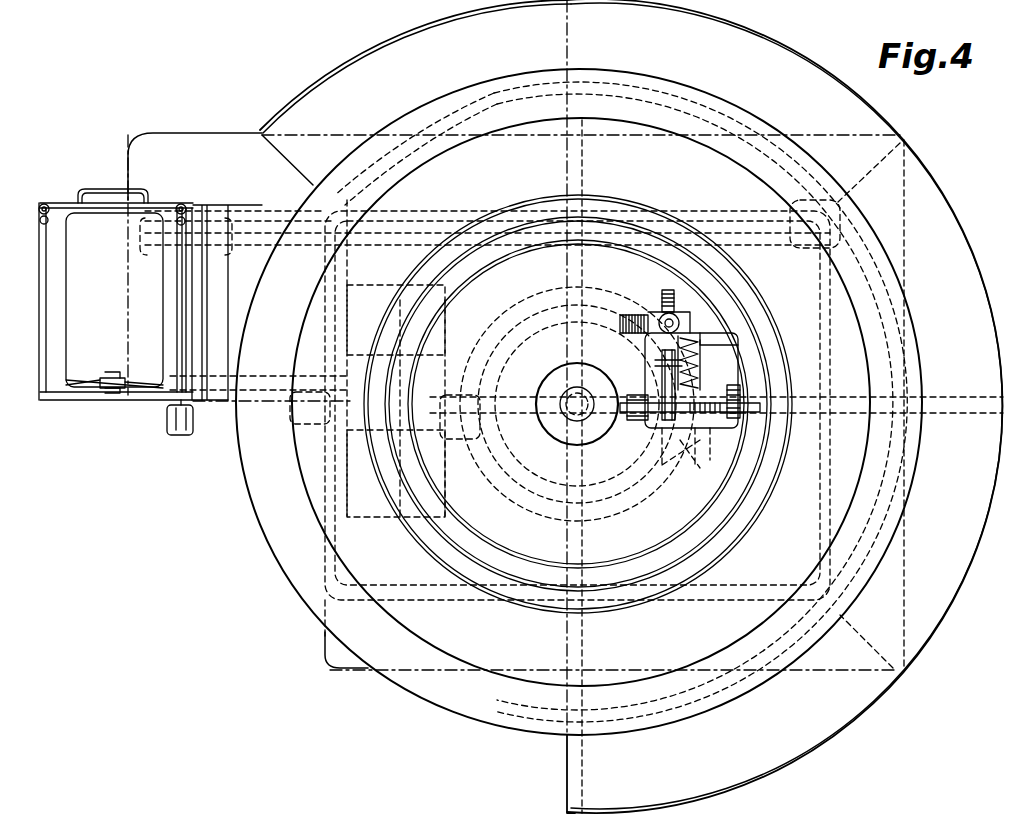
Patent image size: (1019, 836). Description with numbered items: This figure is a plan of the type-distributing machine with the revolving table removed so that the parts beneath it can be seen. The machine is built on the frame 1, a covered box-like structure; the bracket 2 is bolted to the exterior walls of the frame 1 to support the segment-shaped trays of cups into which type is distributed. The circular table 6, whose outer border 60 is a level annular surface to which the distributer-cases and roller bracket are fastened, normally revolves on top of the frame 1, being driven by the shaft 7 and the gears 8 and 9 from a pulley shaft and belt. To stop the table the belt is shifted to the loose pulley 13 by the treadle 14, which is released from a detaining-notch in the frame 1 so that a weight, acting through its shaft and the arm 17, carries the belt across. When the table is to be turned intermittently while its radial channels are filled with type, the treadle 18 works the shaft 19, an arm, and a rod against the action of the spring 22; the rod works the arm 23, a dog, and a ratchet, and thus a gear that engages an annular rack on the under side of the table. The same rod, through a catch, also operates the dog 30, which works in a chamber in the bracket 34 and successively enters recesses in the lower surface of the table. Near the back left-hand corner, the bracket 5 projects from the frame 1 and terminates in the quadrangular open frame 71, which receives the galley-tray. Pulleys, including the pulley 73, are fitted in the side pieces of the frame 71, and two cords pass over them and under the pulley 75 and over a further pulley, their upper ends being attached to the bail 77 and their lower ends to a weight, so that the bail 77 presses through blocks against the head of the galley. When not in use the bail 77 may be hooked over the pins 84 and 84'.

The frame 1 is at (346, 650).
The bracket 2 is at (631, 406).
The bracket 5 is at (195, 264).
The circular table 6 is at (382, 452).
The shaft 7 is at (577, 404).
The gear 8 is at (578, 404).
The gear 9 is at (700, 368).
The loose pulley 13 is at (470, 440).
The treadle 14 is at (312, 424).
The arm 17 is at (362, 300).
The treadle 18 is at (180, 426).
The shaft 19 is at (796, 246).
The spring 22 is at (662, 300).
The arm 23 is at (662, 362).
The dog 30 is at (690, 327).
The bracket 34 is at (680, 322).
The outer border 60 is at (905, 368).
The quadrangular open frame 71 is at (92, 406).
The pulley 73 is at (40, 378).
The pulley 75 is at (114, 372).
The bail 77 is at (113, 186).
The pin 84 is at (41, 203).
The pin 84' is at (188, 204).